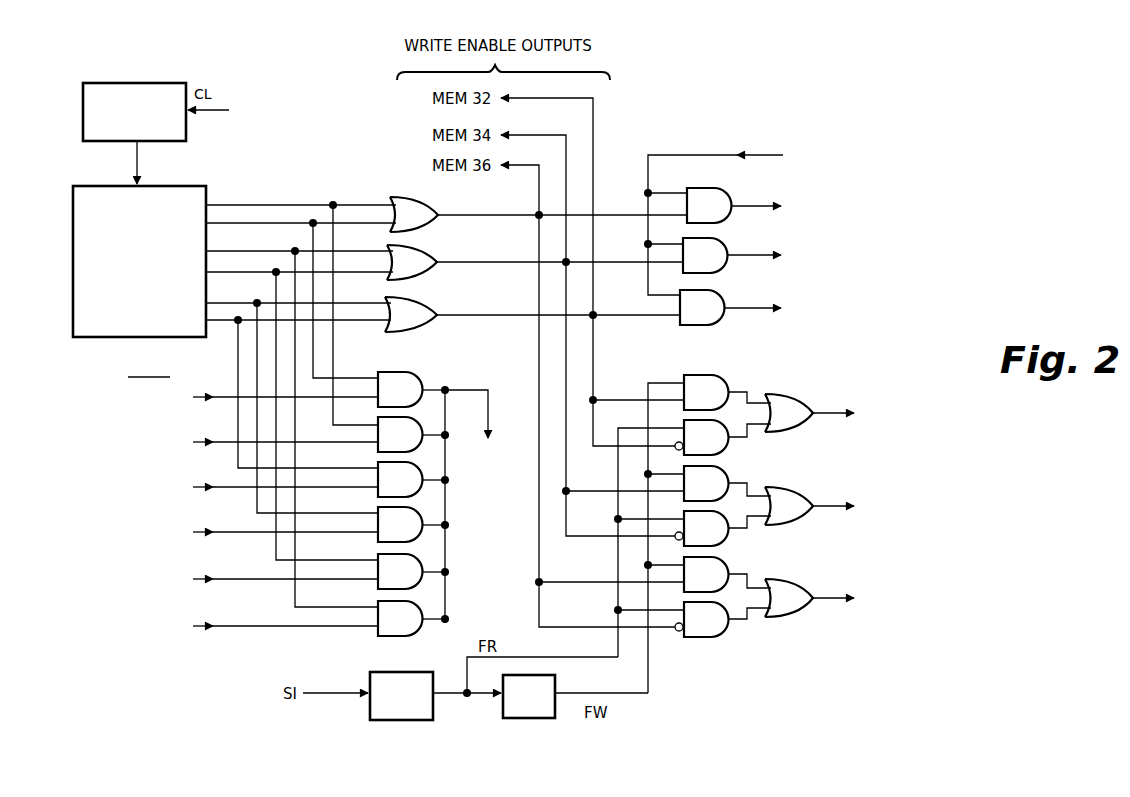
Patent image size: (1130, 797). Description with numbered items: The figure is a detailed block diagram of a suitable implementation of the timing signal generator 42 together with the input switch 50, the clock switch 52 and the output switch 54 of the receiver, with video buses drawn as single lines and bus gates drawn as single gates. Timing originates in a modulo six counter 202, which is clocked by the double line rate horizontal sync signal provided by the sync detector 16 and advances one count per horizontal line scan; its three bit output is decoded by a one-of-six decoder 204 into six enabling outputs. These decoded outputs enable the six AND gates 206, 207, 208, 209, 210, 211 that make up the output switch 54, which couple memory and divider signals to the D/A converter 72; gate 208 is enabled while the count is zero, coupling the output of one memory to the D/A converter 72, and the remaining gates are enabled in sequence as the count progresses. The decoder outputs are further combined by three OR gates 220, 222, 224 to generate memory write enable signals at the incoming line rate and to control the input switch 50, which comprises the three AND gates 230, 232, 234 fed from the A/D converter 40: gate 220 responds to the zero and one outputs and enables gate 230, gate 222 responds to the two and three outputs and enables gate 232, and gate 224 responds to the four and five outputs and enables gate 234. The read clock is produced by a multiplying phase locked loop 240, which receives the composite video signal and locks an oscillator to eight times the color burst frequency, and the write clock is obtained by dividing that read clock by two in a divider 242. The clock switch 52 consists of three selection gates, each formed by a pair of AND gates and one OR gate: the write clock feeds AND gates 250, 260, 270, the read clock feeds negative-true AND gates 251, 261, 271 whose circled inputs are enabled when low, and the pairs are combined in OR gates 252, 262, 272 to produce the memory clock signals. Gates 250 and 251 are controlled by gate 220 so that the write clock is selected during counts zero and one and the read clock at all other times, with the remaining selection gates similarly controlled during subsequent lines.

The modulo six counter 202 is at (83, 105).
The one-of-six decoder 204 is at (73, 263).
The timing signal generator 42 is at (270, 189).
The OR gate 224 is at (414, 197).
The OR gate 222 is at (423, 257).
The OR gate 220 is at (423, 309).
The input switch 50 is at (692, 136).
The AND gate 234 is at (734, 205).
The AND gate 232 is at (732, 255).
The AND gate 230 is at (730, 307).
The output switch 54 is at (437, 373).
The AND gate 206 is at (411, 389).
The AND gate 207 is at (411, 434).
The AND gate 208 is at (411, 479).
The AND gate 209 is at (411, 524).
The AND gate 210 is at (411, 571).
The AND gate 211 is at (411, 618).
The clock switch 52 is at (769, 379).
The AND gate 250 is at (727, 392).
The AND gate 251 is at (723, 437).
The OR gate 252 is at (809, 413).
The AND gate 260 is at (727, 483).
The AND gate 261 is at (723, 528).
The OR gate 262 is at (809, 506).
The AND gate 270 is at (727, 574).
The AND gate 271 is at (723, 619).
The OR gate 272 is at (809, 598).
The multiplying phase locked loop 240 is at (372, 668).
The divider 242 is at (557, 682).
The A/D converter 40 is at (819, 157).
The D/A converter 72 is at (490, 493).
The sync detector 16 is at (250, 114).